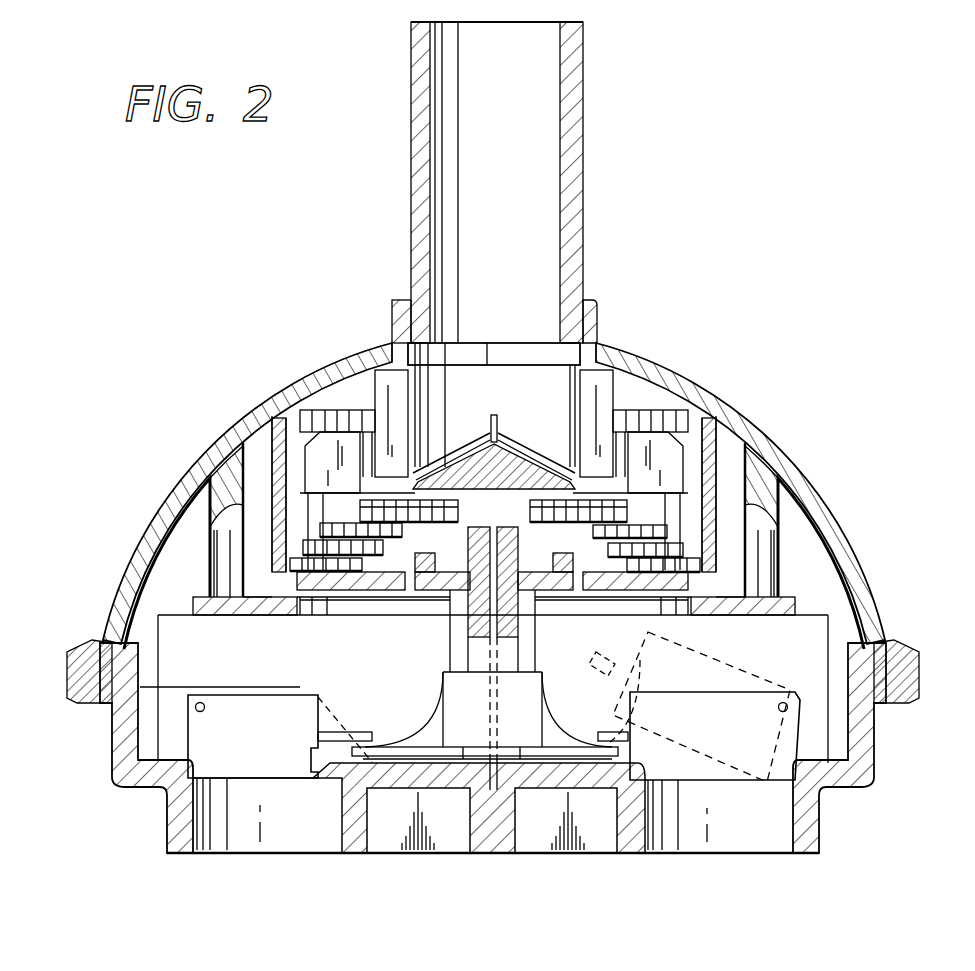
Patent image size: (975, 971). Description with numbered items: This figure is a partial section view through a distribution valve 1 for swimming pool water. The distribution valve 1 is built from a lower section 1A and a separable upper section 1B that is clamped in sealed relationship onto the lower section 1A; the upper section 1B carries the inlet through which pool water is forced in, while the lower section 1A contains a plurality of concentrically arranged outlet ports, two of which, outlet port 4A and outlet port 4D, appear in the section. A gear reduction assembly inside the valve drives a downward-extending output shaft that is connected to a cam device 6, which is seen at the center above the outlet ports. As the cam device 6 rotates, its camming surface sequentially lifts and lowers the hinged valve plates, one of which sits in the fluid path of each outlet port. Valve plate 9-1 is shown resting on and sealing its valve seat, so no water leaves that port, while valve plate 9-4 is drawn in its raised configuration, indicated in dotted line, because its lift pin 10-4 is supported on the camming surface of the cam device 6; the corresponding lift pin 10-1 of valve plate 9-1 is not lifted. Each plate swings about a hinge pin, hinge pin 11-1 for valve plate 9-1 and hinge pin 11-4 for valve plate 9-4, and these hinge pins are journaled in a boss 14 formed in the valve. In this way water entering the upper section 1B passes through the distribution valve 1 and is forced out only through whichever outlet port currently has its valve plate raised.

The distribution valve 1 is at (136, 870).
The lower section 1A is at (109, 736).
The upper section 1B is at (164, 498).
The outlet port 4A is at (243, 842).
The outlet port 4D is at (724, 838).
The cam device 6 is at (437, 723).
The valve plate 9-1 is at (278, 762).
The valve plate 9-4 is at (821, 628).
The lift pin 10-1 is at (358, 730).
The lift pin 10-4 is at (600, 658).
The hinge pin 11-1 is at (197, 704).
The hinge pin 11-4 is at (778, 708).
The boss 14 is at (282, 688).